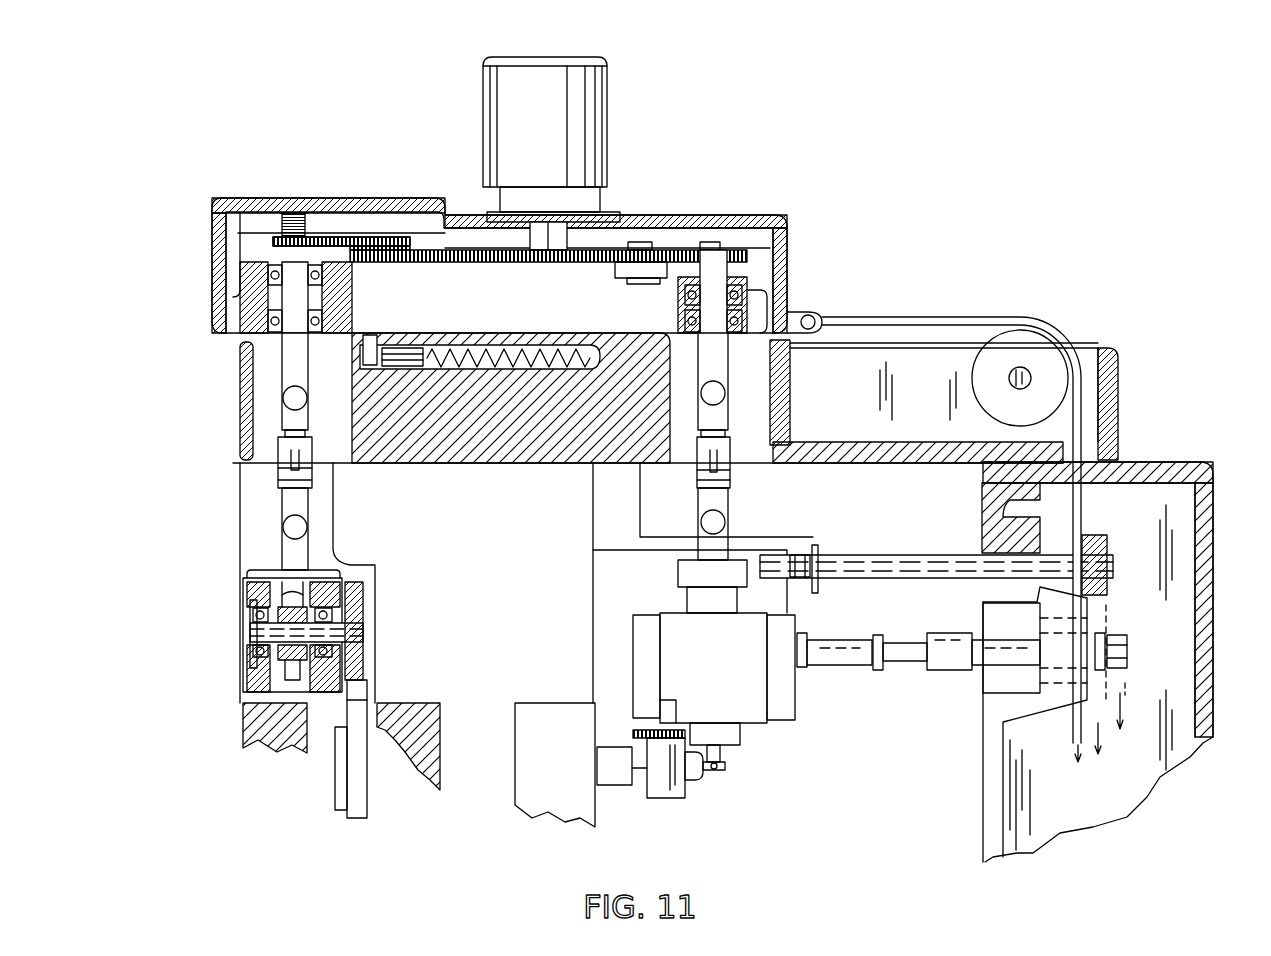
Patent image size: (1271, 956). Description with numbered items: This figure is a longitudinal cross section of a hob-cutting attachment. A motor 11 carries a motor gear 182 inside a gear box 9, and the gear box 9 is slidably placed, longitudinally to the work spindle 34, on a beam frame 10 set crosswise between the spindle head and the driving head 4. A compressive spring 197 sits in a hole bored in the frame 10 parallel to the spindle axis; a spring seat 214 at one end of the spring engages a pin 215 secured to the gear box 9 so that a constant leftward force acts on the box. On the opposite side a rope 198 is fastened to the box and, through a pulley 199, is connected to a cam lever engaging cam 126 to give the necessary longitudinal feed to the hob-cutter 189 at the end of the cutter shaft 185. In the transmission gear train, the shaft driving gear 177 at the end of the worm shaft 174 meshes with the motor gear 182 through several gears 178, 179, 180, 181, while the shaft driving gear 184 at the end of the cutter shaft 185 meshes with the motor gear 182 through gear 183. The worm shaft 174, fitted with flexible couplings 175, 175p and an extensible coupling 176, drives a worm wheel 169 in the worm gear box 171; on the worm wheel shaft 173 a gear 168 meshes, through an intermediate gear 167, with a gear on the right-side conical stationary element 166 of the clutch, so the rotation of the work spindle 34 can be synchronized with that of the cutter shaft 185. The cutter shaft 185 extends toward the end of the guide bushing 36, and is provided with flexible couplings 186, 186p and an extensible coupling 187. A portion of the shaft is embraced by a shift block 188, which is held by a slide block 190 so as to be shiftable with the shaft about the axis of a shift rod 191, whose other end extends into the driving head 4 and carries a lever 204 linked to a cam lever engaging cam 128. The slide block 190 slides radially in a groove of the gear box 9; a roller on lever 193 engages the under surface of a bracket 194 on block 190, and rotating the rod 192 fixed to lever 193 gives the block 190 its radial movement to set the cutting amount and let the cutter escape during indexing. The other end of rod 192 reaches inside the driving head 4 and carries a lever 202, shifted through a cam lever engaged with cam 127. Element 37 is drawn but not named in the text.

The driving head 4 is at (1207, 572).
The gear box 9 is at (783, 250).
The beam frame 10 is at (1110, 355).
The motor 11 is at (597, 92).
The work spindle 34 is at (617, 773).
The guide bushing 36 is at (697, 773).
The switch bracket 37 is at (667, 783).
The cam 126 is at (1067, 763).
The cam 127 is at (1098, 704).
The cam 128 is at (1128, 721).
The right-side conical stationary element 166 is at (357, 792).
The intermediate gear 167 is at (357, 702).
The gear 168 is at (355, 660).
The worm wheel 169 is at (260, 622).
The worm gear box 171 is at (257, 588).
The worm wheel shaft 173 is at (267, 638).
The worm shaft 174 is at (292, 553).
The flexible coupling 175 is at (292, 527).
The flexible coupling 175p is at (283, 402).
The extensible coupling 176 is at (287, 483).
The shaft driving gear 177 is at (273, 240).
The gear 178 is at (320, 237).
The gear 179 is at (375, 240).
The gear 180 is at (402, 237).
The gear 181 is at (447, 253).
The motor gear 182 is at (567, 245).
The gear 183 is at (640, 252).
The shaft driving gear 184 is at (708, 253).
The cutter shaft 185 is at (715, 352).
The flexible coupling 186 is at (717, 522).
The flexible coupling 186p is at (715, 395).
The extensible coupling 187 is at (713, 460).
The shift block 188 is at (755, 688).
The hob-cutter 189 is at (722, 767).
The slide block 190 is at (778, 713).
The shift rod 191 is at (895, 650).
The rod 192 is at (870, 565).
The lever 193 is at (798, 587).
The bracket 194 is at (797, 550).
The compressive spring 197 is at (480, 349).
The rope 198 is at (888, 318).
The pulley 199 is at (985, 368).
The lever 202 is at (1090, 537).
The lever 204 is at (1117, 637).
The spring seat 214 is at (400, 347).
The pin 215 is at (375, 352).